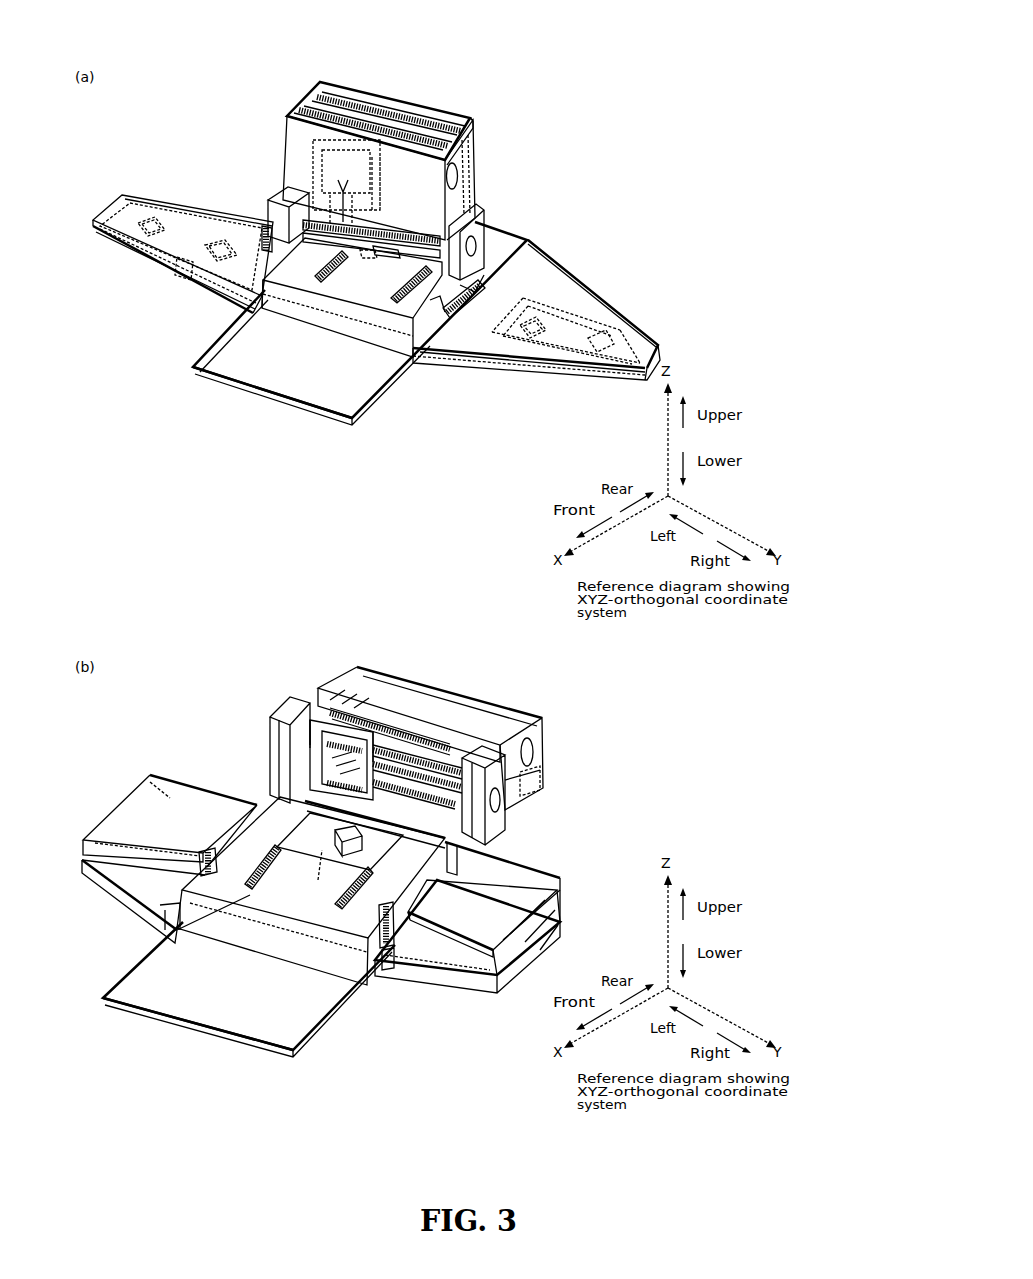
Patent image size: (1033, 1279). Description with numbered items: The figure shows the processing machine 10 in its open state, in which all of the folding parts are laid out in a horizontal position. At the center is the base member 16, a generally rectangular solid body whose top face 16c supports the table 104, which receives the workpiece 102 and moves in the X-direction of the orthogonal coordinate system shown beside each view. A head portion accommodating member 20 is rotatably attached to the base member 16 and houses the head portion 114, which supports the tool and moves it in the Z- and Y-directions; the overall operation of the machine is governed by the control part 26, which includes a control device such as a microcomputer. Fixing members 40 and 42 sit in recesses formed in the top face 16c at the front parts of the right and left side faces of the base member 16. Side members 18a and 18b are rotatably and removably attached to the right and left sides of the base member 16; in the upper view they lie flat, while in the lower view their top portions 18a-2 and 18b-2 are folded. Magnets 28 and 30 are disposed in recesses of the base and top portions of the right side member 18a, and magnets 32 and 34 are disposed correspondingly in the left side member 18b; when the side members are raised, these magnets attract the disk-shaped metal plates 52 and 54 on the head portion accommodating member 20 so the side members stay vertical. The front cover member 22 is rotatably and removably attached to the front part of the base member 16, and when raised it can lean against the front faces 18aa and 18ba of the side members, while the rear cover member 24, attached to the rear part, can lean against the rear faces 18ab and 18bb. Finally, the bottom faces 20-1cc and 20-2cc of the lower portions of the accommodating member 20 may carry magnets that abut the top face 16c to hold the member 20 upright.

The processing machine 10 is at (428, 80).
The head portion accommodating member 20 is at (293, 140).
The control part 26 is at (476, 131).
The metal plate 52 is at (462, 178).
The metal plate 54 is at (483, 227).
The fixing member 42 is at (283, 247).
The rear cover member 24 is at (508, 258).
The side member 18a is at (545, 380).
The rear face 18ab is at (540, 268).
The front face 18aa is at (478, 362).
The magnet 28 is at (545, 310).
The magnet 30 is at (600, 336).
The fixing member 40 is at (455, 337).
The side member 18b is at (133, 272).
The front face 18ba is at (193, 275).
The rear face 18bb is at (237, 210).
The magnet 34 is at (135, 213).
The magnet 32 is at (205, 235).
The base member 16 is at (305, 322).
The top face 16c is at (268, 284).
The front cover member 22 is at (325, 382).
The workpiece 102 is at (355, 245).
The table 104 is at (375, 262).
The head portion 114 is at (318, 690).
The bottom face 20-2cc is at (267, 762).
The bottom face 20-1cc is at (520, 812).
The top portion 18b-2 is at (170, 797).
The top portion 18a-2 is at (532, 890).